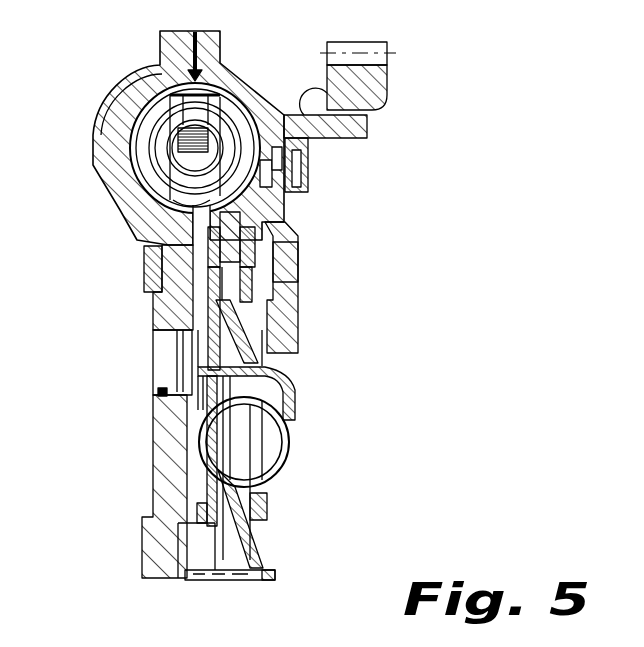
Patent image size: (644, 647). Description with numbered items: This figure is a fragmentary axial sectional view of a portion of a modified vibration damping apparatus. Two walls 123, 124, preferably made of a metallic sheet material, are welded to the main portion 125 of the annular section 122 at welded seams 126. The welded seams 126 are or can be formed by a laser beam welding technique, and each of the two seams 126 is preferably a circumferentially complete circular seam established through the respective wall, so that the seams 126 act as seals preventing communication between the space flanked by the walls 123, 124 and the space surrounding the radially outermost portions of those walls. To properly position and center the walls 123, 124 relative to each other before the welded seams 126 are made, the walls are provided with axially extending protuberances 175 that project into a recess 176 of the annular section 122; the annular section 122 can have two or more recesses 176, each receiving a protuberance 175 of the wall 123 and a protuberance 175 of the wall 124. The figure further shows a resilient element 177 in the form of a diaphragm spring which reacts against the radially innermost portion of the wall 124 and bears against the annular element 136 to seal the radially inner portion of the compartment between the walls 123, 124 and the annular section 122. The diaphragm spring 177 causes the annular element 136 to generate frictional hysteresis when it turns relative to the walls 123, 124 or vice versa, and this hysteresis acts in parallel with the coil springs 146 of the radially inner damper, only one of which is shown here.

The annular section 122 is at (297, 241).
The wall 123 is at (177, 375).
The wall 124 is at (297, 321).
The main portion 125 is at (147, 244).
The welded seam 126 is at (145, 272).
The annular element 136 is at (263, 543).
The coil spring 146 is at (287, 437).
The protuberance 175 is at (157, 306).
The recess 176 is at (162, 315).
The resilient element 177 is at (266, 512).